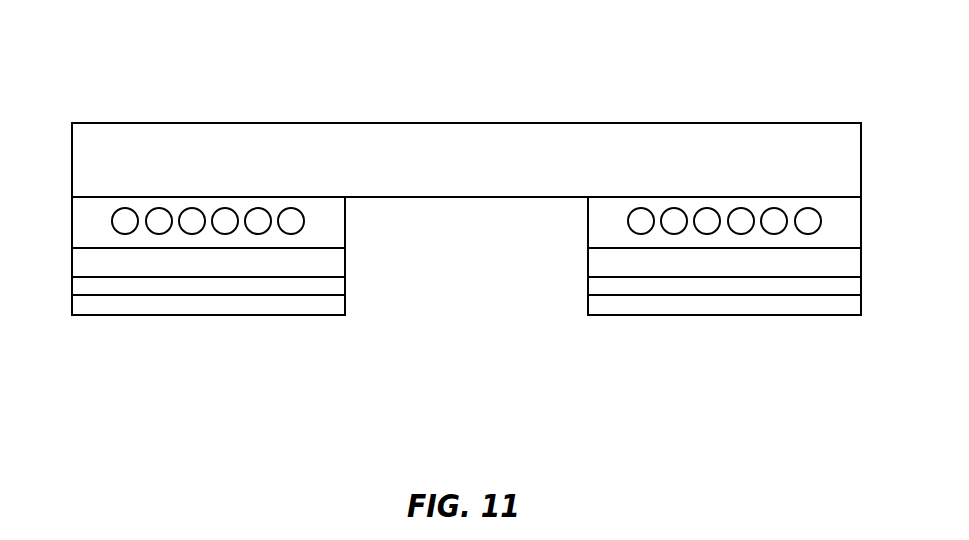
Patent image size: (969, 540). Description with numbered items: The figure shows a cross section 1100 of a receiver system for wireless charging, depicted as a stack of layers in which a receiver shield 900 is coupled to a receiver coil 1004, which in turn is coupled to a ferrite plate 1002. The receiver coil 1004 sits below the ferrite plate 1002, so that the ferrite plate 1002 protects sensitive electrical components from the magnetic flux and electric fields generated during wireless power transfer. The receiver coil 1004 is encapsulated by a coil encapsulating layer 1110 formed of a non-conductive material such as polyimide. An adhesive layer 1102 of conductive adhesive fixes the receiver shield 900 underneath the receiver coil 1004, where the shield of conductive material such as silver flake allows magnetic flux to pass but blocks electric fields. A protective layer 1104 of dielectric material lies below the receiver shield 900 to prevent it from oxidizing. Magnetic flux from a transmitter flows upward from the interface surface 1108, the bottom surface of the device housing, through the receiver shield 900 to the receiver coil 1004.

The cross section 1100 is at (112, 59).
The ferrite plate 1002 is at (125, 188).
The coil encapsulating layer 1110 is at (862, 224).
The receiver coil 1004 is at (304, 220).
The adhesive layer 1102 is at (862, 262).
The receiver shield 900 is at (862, 285).
The protective layer 1104 is at (862, 307).
The interface surface 1108 is at (478, 355).